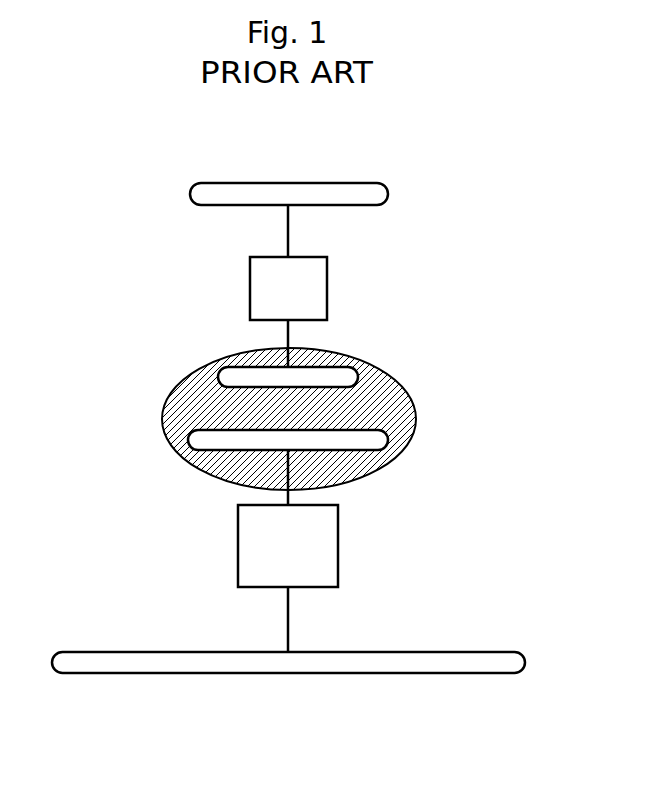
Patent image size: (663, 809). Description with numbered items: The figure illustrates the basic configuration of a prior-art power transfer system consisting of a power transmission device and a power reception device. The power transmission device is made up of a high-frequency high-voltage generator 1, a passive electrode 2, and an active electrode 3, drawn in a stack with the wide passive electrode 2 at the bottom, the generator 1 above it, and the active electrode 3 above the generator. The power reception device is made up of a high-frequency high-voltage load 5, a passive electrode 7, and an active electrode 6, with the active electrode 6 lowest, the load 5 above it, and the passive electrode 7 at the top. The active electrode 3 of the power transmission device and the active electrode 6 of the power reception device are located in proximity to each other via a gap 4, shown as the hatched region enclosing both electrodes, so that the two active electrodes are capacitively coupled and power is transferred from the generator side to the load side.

The high-frequency high-voltage generator 1 is at (338, 543).
The passive electrode 2 is at (455, 652).
The active electrode 3 is at (372, 443).
The gap 4 is at (397, 410).
The high-frequency high-voltage load 5 is at (327, 287).
The active electrode 6 is at (353, 378).
The passive electrode 7 is at (352, 183).